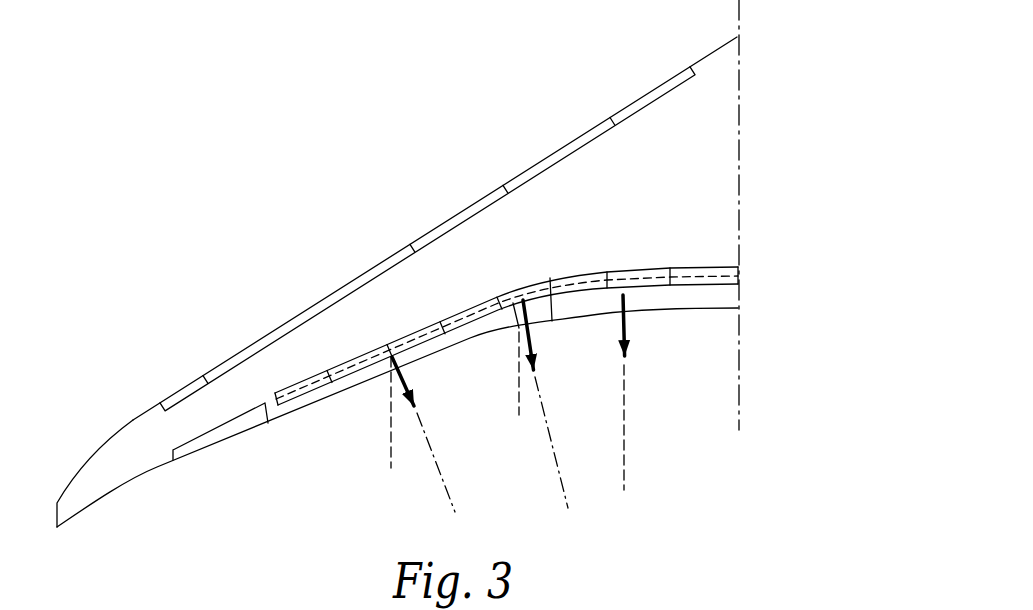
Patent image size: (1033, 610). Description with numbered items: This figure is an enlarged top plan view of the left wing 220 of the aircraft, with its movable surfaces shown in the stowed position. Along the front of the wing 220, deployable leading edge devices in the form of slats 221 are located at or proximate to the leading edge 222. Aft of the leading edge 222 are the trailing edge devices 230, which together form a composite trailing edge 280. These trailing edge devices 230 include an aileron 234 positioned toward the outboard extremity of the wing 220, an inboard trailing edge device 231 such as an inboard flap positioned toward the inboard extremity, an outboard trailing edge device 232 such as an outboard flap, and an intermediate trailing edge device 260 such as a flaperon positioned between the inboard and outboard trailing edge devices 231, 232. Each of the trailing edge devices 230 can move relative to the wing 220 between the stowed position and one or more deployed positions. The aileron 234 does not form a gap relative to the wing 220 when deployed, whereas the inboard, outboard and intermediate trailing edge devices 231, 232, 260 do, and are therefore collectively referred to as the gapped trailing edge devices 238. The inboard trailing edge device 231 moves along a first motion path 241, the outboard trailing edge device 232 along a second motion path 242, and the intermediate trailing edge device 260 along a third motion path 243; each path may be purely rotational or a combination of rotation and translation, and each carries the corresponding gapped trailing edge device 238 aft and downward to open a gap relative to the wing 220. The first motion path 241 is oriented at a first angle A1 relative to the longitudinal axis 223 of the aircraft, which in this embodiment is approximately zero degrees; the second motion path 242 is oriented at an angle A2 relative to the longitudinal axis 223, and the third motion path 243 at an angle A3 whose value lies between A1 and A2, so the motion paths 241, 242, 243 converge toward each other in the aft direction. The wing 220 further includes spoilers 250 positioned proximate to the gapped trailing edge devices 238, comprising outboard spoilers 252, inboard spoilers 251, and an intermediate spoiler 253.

The left wing 220 is at (165, 241).
The slats 221 is at (568, 147).
The leading edge 222 is at (130, 420).
The longitudinal axis 223 is at (739, 128).
The trailing edge devices 230 is at (505, 358).
The inboard trailing edge device 231 is at (694, 310).
The outboard trailing edge device 232 is at (328, 395).
The aileron 234 is at (198, 453).
The gapped trailing edge devices 238 is at (594, 369).
The first motion path 241 is at (628, 343).
The second motion path 242 is at (416, 392).
The third motion path 243 is at (541, 357).
The spoilers 250 is at (481, 278).
The inboard spoilers 251 is at (720, 270).
The outboard spoilers 252 is at (472, 310).
The intermediate spoiler 253 is at (534, 278).
The intermediate trailing edge device 260 is at (526, 288).
The composite trailing edge 280 is at (235, 434).
The first angle A1 is at (598, 316).
The second angle A2 is at (386, 393).
The third angle A3 is at (500, 336).